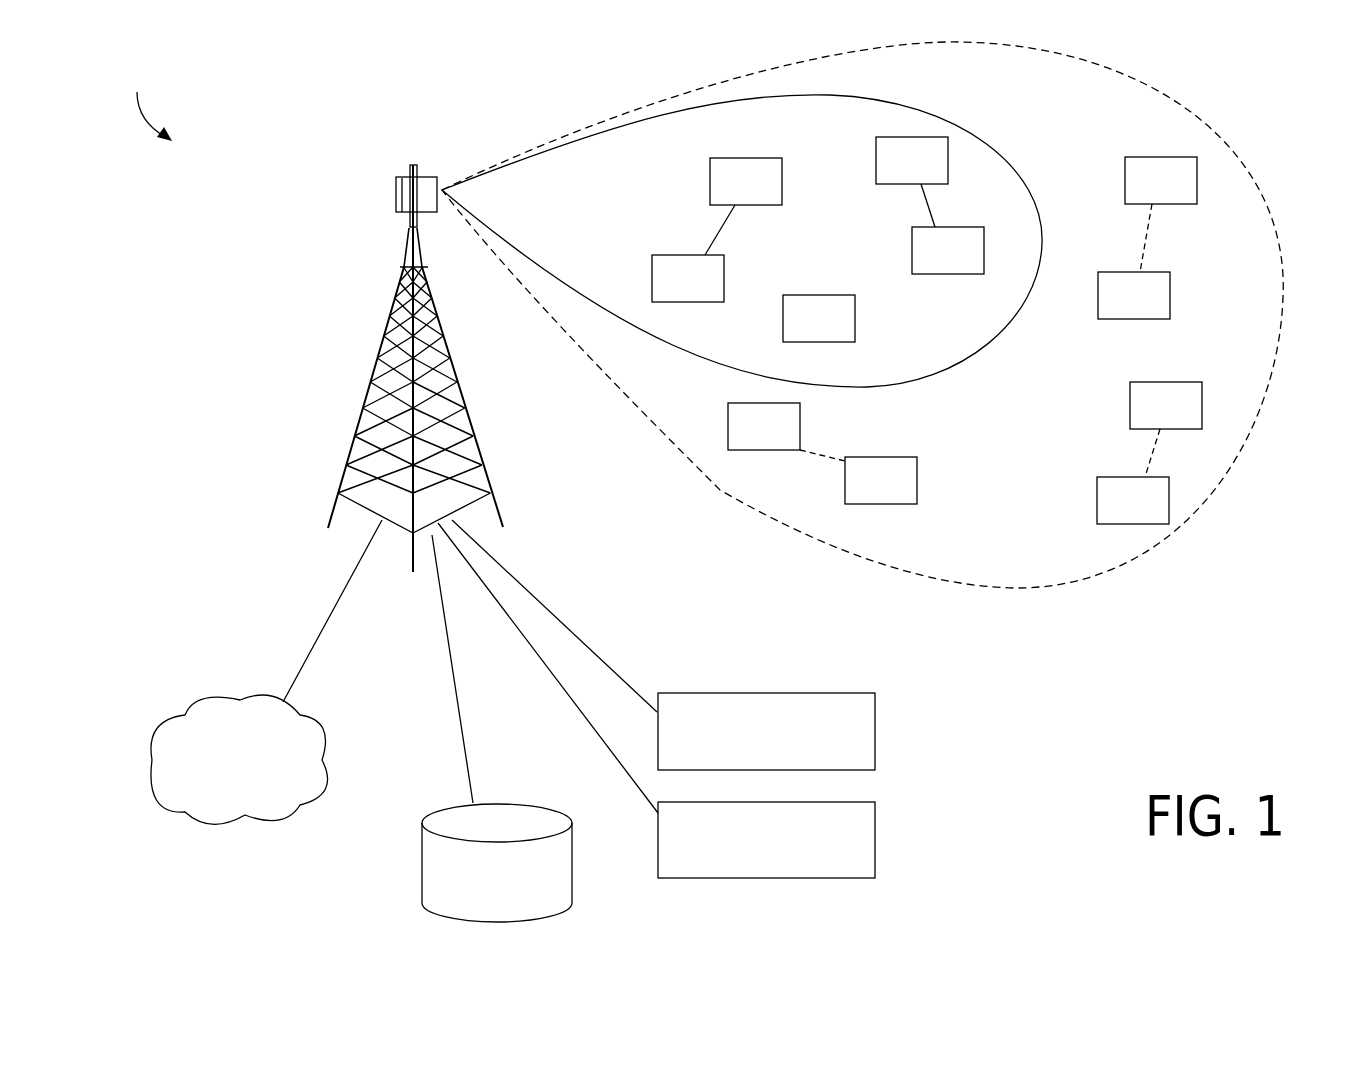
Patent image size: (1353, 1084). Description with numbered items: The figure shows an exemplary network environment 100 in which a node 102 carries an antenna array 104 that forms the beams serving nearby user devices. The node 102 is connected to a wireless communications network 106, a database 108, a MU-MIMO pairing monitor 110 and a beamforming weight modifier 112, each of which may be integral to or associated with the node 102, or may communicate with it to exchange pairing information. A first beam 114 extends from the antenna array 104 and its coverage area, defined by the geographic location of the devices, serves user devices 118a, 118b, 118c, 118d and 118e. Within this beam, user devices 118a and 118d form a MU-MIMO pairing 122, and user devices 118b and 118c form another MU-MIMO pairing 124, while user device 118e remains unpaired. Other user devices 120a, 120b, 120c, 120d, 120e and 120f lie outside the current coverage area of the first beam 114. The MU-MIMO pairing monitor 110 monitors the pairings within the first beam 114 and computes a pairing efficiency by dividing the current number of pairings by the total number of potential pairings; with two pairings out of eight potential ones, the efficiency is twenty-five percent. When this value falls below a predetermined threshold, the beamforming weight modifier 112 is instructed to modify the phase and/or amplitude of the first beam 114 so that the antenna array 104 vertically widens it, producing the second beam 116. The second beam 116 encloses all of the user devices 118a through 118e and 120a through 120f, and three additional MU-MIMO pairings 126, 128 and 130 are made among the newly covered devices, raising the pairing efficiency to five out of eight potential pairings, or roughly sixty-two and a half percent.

The network environment 100 is at (145, 103).
The node 102 is at (367, 384).
The antenna array 104 is at (393, 183).
The wireless communications network 106 is at (222, 822).
The database 108 is at (495, 920).
The MU-MIMO pairing monitor 110 is at (878, 727).
The beamforming weight modifier 112 is at (878, 836).
The first beam 114 is at (512, 165).
The second beam 116 is at (588, 357).
The user device 118a is at (710, 183).
The user device 118b is at (876, 158).
The user device 118c is at (912, 250).
The user device 118d is at (722, 278).
The user device 118e is at (855, 320).
The user device 120a is at (1125, 180).
The user device 120b is at (1170, 297).
The user device 120c is at (1130, 406).
The user device 120d is at (1097, 500).
The user device 120e is at (917, 480).
The user device 120f is at (798, 422).
The MU-MIMO pairing 122 is at (719, 231).
The MU-MIMO pairing 124 is at (928, 205).
The MU-MIMO pairing 126 is at (1146, 240).
The MU-MIMO pairing 128 is at (1153, 450).
The MU-MIMO pairing 130 is at (823, 456).